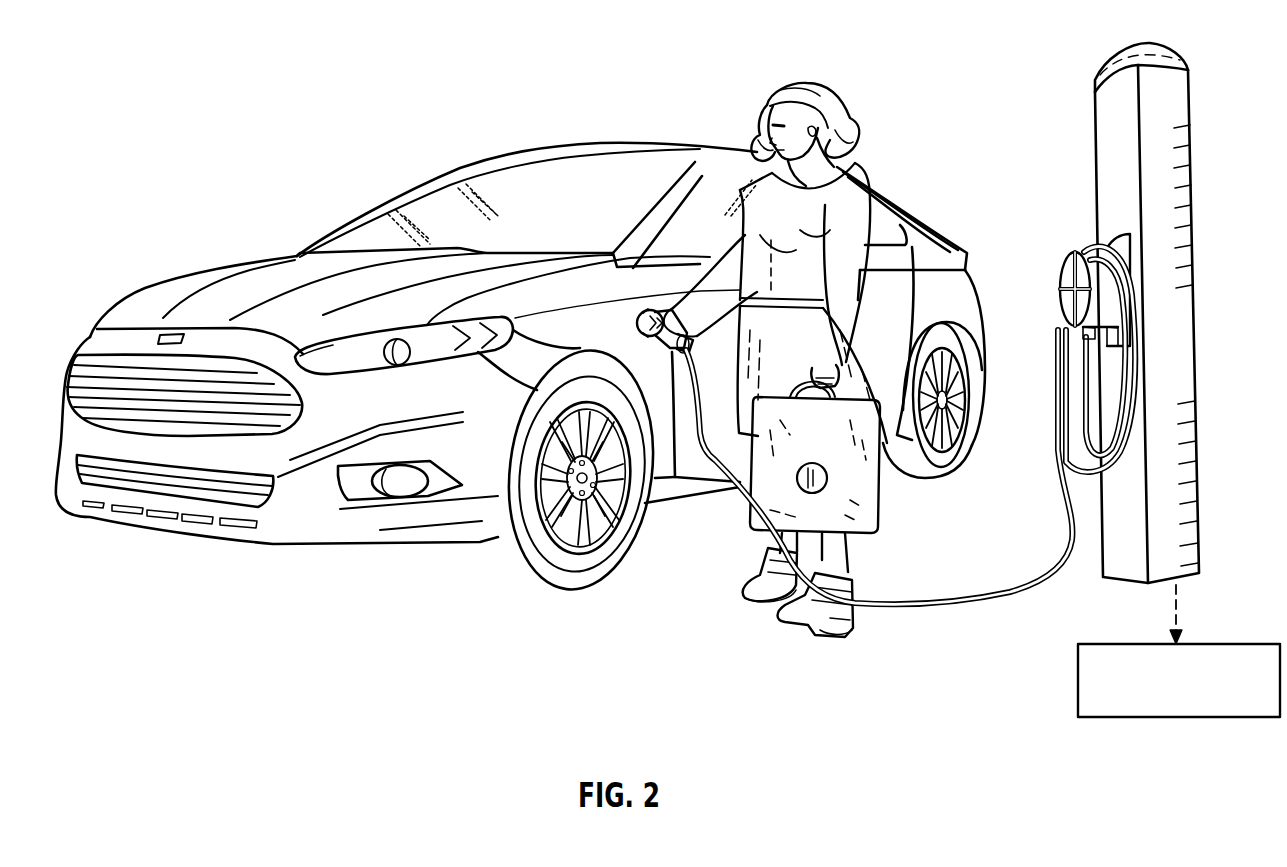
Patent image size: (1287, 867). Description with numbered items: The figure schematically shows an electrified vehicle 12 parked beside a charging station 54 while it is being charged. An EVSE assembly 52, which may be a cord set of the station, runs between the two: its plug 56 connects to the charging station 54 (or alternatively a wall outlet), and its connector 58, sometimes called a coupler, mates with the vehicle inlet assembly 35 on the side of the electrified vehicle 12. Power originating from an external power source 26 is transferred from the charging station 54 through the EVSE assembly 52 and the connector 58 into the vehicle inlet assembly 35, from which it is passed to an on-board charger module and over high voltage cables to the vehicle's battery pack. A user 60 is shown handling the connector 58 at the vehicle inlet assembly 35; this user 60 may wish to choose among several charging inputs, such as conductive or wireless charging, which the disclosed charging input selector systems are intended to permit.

The electrified vehicle 12 is at (347, 78).
The external power source 26 is at (1226, 644).
The vehicle inlet assembly 35 is at (645, 322).
The EVSE assembly 52 is at (932, 600).
The charging station 54 is at (1118, 110).
The plug 56 is at (1078, 332).
The connector 58 is at (655, 316).
The user 60 is at (832, 72).